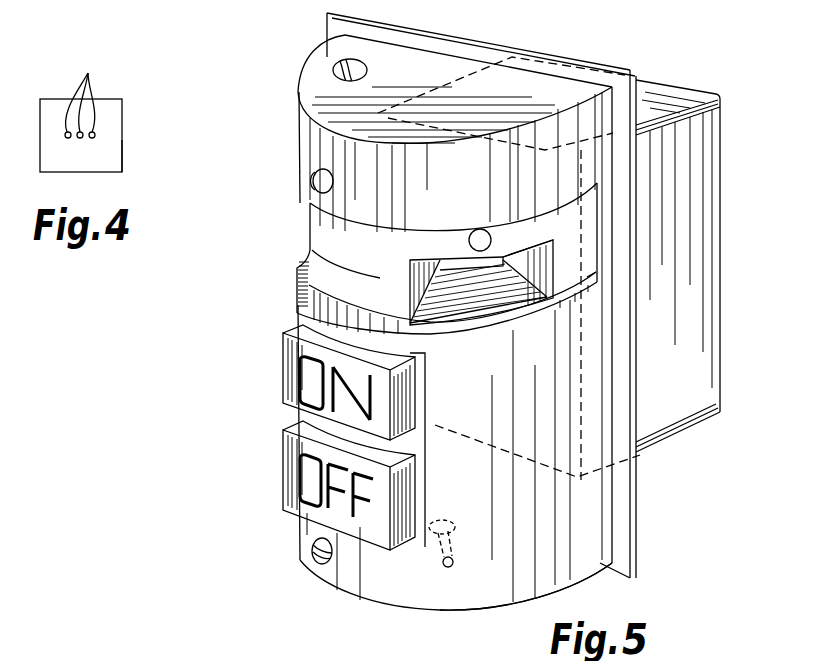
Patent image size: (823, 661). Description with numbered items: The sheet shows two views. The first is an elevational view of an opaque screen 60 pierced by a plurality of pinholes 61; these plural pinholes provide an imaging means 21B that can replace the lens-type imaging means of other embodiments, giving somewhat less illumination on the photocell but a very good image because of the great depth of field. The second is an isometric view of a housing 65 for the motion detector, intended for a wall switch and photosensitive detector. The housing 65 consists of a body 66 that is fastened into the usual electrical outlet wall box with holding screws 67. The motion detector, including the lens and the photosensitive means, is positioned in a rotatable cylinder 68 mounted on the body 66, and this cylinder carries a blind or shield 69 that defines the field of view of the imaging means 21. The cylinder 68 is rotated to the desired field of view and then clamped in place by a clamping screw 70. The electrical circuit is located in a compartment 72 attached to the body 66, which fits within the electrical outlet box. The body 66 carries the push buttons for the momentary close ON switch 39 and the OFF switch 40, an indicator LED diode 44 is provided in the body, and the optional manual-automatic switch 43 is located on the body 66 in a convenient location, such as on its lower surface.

In FIG. 4, the opaque screen 60 is at (115, 108).
In FIG. 4, the pinholes 61 is at (87, 90).
In FIG. 4, the imaging means 21B is at (123, 151).
In FIG. 5, the housing 65 is at (312, 48).
In FIG. 5, the clamping screw 70 is at (340, 66).
In FIG. 5, the holding screws 67 is at (313, 181).
In FIG. 5, the rotatable cylinder 68 is at (318, 240).
In FIG. 5, the imaging means 21 is at (449, 268).
In FIG. 5, the indicator LED diode 44 is at (480, 229).
In FIG. 5, the blind or shield 69 is at (532, 275).
In FIG. 5, the compartment 72 is at (713, 127).
In FIG. 5, the ON switch 39 is at (283, 360).
In FIG. 5, the OFF switch 40 is at (283, 463).
In FIG. 5, the manual-automatic switch 43 is at (455, 561).
In FIG. 5, the body 66 is at (434, 600).